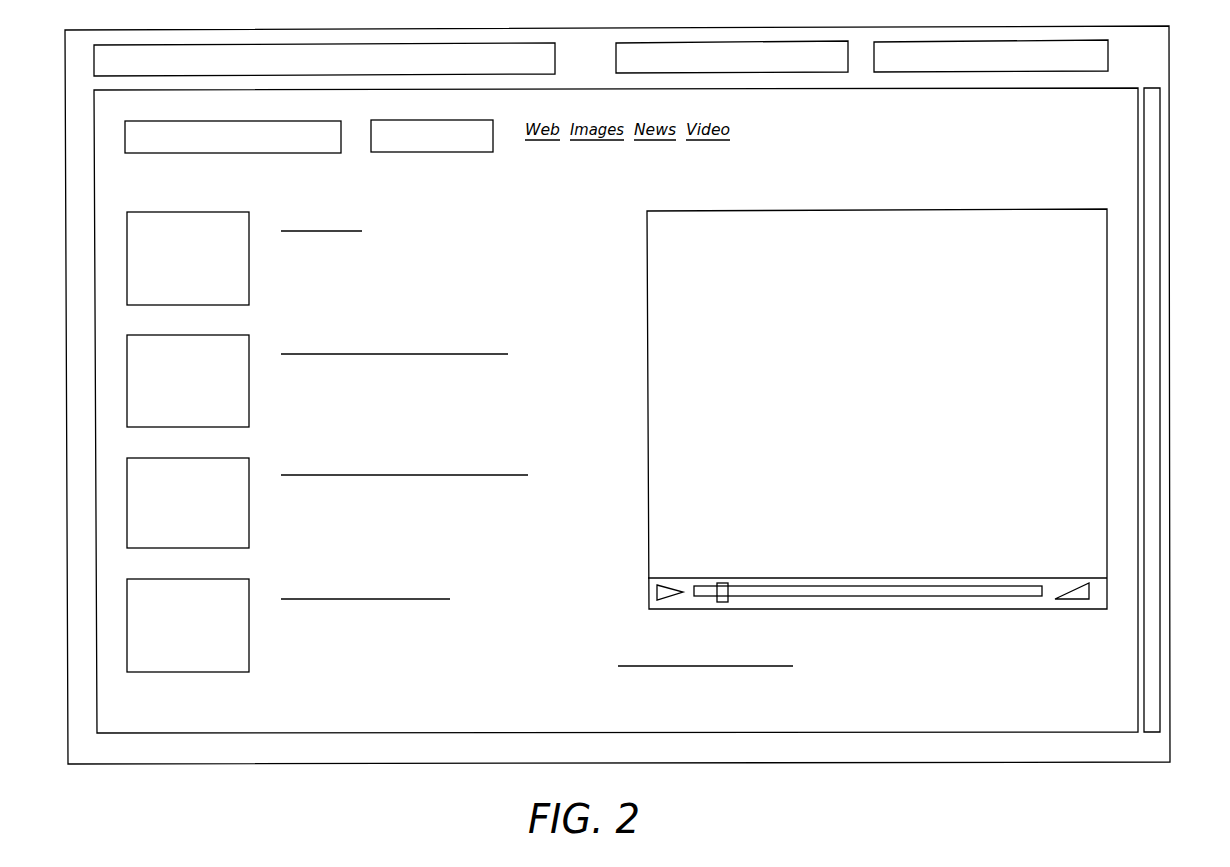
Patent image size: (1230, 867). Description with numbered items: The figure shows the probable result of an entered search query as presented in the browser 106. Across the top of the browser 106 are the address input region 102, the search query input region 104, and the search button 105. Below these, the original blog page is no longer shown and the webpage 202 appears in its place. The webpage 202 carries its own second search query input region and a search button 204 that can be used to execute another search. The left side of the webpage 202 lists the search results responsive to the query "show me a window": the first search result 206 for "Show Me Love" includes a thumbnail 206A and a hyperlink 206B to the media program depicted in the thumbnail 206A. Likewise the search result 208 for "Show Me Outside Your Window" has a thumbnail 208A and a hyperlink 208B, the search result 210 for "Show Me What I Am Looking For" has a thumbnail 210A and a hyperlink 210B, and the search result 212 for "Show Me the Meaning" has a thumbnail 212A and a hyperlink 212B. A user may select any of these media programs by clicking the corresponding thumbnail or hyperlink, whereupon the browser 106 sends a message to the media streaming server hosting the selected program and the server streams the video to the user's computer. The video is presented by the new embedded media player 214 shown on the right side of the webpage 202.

The address input region 102 is at (380, 46).
The search query input region 104 is at (693, 44).
The search button 105 is at (995, 42).
The browser 106 is at (925, 30).
The webpage 202 is at (305, 154).
The search button 204 is at (443, 153).
The first search result 206 is at (348, 271).
The thumbnail 206A is at (249, 290).
The hyperlink 206B is at (412, 217).
The search result 208 is at (352, 370).
The thumbnail 208A is at (249, 413).
The hyperlink 208B is at (390, 335).
The search result 210 is at (361, 493).
The thumbnail 210A is at (249, 528).
The hyperlink 210B is at (383, 455).
The search result 212 is at (327, 617).
The thumbnail 212A is at (249, 653).
The hyperlink 212B is at (373, 578).
The media player 214 is at (886, 210).